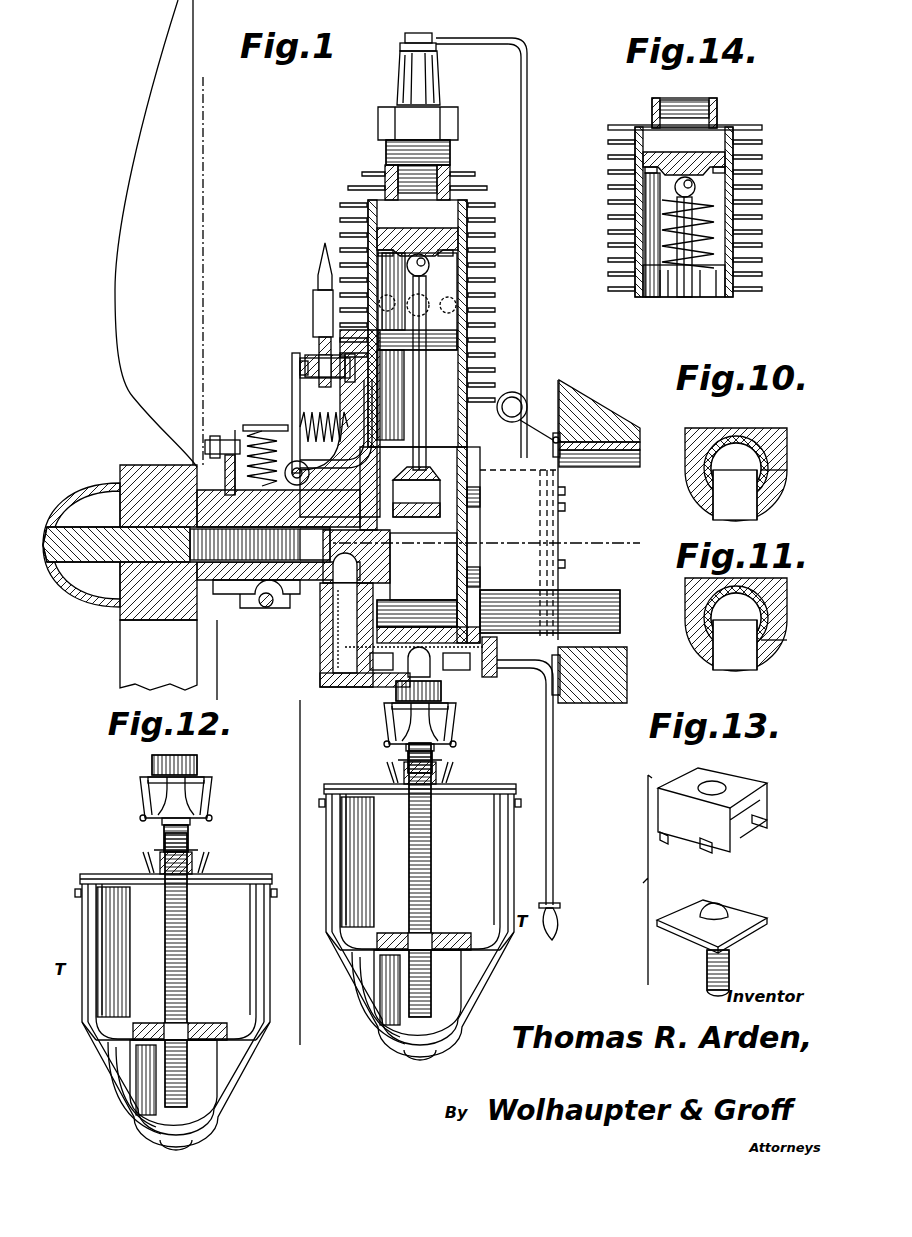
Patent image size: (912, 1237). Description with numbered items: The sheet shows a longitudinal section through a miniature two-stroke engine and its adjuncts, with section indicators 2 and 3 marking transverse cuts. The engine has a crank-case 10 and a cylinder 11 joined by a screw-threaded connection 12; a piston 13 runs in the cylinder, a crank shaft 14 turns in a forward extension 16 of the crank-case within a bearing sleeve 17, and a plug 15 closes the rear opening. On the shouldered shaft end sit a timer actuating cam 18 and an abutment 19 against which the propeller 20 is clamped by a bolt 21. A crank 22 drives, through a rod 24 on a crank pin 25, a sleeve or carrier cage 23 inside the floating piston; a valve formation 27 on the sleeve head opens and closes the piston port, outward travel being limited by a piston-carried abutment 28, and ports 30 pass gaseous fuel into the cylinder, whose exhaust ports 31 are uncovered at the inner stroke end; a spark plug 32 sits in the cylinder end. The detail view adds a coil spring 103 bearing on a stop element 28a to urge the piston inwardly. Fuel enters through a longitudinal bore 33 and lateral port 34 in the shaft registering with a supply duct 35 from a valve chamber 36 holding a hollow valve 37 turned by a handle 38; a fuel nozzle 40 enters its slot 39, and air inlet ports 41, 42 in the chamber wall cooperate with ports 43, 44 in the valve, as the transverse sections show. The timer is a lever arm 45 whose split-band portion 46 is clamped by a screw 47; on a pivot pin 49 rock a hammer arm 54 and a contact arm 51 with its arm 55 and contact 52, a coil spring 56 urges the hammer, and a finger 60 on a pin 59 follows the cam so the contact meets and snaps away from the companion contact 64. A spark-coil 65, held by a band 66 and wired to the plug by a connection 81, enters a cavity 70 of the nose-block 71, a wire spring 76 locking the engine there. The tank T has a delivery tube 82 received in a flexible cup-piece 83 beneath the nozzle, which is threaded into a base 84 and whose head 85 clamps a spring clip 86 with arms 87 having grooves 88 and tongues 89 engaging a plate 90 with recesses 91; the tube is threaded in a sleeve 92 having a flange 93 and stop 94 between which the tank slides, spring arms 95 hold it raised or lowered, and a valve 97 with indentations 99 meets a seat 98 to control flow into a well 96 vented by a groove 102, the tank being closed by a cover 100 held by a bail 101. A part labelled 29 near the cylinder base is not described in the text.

In FIG. 1, the section line 2- 2 is at (197, 77).
In FIG. 1, the section line 3- 3 is at (45, 556).
In FIG. 1, the crank-case 10 is at (472, 575).
In FIG. 1, the cylinder 11 is at (397, 385).
In FIG. 1, the screw-threaded connection 12 is at (470, 408).
In FIG. 1, the piston 13 is at (446, 240).
In FIG. 14, the piston 13 is at (635, 150).
In FIG. 1, the crank shaft 14 is at (290, 582).
In FIG. 1, the plug 15 is at (470, 531).
In FIG. 1, the forward extension 16 is at (252, 600).
In FIG. 1, the bearing sleeve 17 is at (336, 435).
In FIG. 1, the timer actuating cam 18 is at (242, 582).
In FIG. 1, the abutment 19 is at (205, 600).
In FIG. 1, the propeller 20 is at (124, 284).
In FIG. 1, the bolt 21 is at (186, 544).
In FIG. 1, the crank 22 is at (400, 488).
In FIG. 1, the sleeve or carrier cage 23 is at (426, 276).
In FIG. 14, the sleeve or carrier cage 23 is at (720, 183).
In FIG. 1, the rod 24 is at (426, 400).
In FIG. 1, the crank pin 25 is at (426, 522).
In FIG. 1, the valve formation 27 is at (410, 240).
In FIG. 1, the piston-carried abutment 28 is at (437, 351).
In FIG. 14, the stop element 28a is at (718, 290).
In FIG. 1, the cylinder base 29 is at (462, 450).
In FIG. 1, the ports 30 is at (370, 232).
In FIG. 1, the exhaust ports 31 is at (462, 309).
In FIG. 1, the spark plug 32 is at (395, 144).
In FIG. 1, the longitudinal bore 33 is at (387, 562).
In FIG. 1, the lateral port 34 is at (388, 560).
In FIG. 1, the gaseous fuel supply duct 35 is at (340, 632).
In FIG. 1, the valve chamber 36 is at (385, 626).
In FIG. 10, the valve chamber 36 is at (738, 436).
In FIG. 11, the valve chamber 36 is at (765, 608).
In FIG. 1, the valve 37 is at (360, 664).
In FIG. 10, the valve 37 is at (706, 476).
In FIG. 11, the valve 37 is at (706, 616).
In FIG. 1, the handle 38 is at (553, 772).
In FIG. 1, the slot 39 is at (438, 630).
In FIG. 1, the fuel nozzle 40 is at (408, 680).
In FIG. 12, the fuel nozzle 40 is at (187, 748).
In FIG. 1, the air inlet port 41 is at (377, 672).
In FIG. 10, the air inlet port 41 is at (745, 512).
In FIG. 1, the air inlet port 42 is at (452, 675).
In FIG. 11, the air inlet port 42 is at (745, 662).
In FIG. 1, the air inlet port 43 is at (365, 695).
In FIG. 10, the air inlet port 43 is at (768, 468).
In FIG. 1, the air inlet port 44 is at (493, 672).
In FIG. 11, the air inlet port 44 is at (765, 641).
In FIG. 1, the lever arm 45 is at (318, 292).
In FIG. 1, the split-band portion 46 is at (278, 508).
In FIG. 1, the screw 47 is at (265, 608).
In FIG. 1, the pivot pin 49 is at (340, 423).
In FIG. 1, the contact arm 51 is at (292, 376).
In FIG. 1, the contact 52 is at (296, 356).
In FIG. 1, the hammer arm 54 is at (302, 428).
In FIG. 1, the forwardly extending arm 55 is at (258, 425).
In FIG. 1, the coil spring 56 is at (240, 440).
In FIG. 1, the pin 59 is at (205, 447).
In FIG. 1, the cam-follower finger 60 is at (225, 486).
In FIG. 1, the companion contact 64 is at (318, 348).
In FIG. 1, the spark-coil 65 is at (541, 510).
In FIG. 1, the band 66 is at (560, 456).
In FIG. 1, the cavity 70 is at (555, 646).
In FIG. 1, the nose-block 71 is at (576, 420).
In FIG. 1, the wire spring 76 is at (526, 402).
In FIG. 1, the connection 81 is at (527, 250).
In FIG. 1, the fuel delivery tube 82 is at (442, 759).
In FIG. 12, the fuel delivery tube 82 is at (197, 838).
In FIG. 13, the fuel delivery tube 82 is at (730, 965).
In FIG. 1, the flexible cup-piece 83 is at (438, 723).
In FIG. 12, the flexible cup-piece 83 is at (191, 797).
In FIG. 1, the base 84 is at (450, 695).
In FIG. 12, the base 84 is at (158, 762).
In FIG. 1, the head 85 is at (394, 719).
In FIG. 12, the head 85 is at (150, 780).
In FIG. 12, the spring clip 86 is at (225, 763).
In FIG. 13, the spring clip 86 is at (740, 775).
In FIG. 1, the spring arms 87 is at (425, 738).
In FIG. 12, the spring arms 87 is at (176, 806).
In FIG. 13, the grooves 88 is at (716, 840).
In FIG. 13, the tongues 89 is at (760, 815).
In FIG. 1, the plate 90 is at (388, 754).
In FIG. 12, the plate 90 is at (148, 820).
In FIG. 13, the plate 90 is at (750, 925).
In FIG. 13, the recesses 91 is at (736, 908).
In FIG. 1, the sleeve 92 is at (441, 880).
In FIG. 12, the sleeve 92 is at (196, 970).
In FIG. 1, the flange 93 is at (402, 772).
In FIG. 12, the flange 93 is at (155, 853).
In FIG. 1, the stop 94 is at (420, 871).
In FIG. 12, the stop 94 is at (176, 961).
In FIG. 1, the spring arms 95 is at (441, 772).
In FIG. 12, the spring arms 95 is at (174, 862).
In FIG. 1, the well 96 is at (378, 1005).
In FIG. 12, the well 96 is at (128, 1088).
In FIG. 1, the valve 97 is at (420, 929).
In FIG. 12, the valve 97 is at (176, 1017).
In FIG. 1, the seat 98 is at (518, 951).
In FIG. 12, the seat 98 is at (262, 1041).
In FIG. 1, the peripheral indentations 99 is at (340, 953).
In FIG. 12, the peripheral indentations 99 is at (89, 1040).
In FIG. 1, the cap or cover 100 is at (420, 800).
In FIG. 12, the cap or cover 100 is at (187, 879).
In FIG. 1, the bail 101 is at (423, 996).
In FIG. 12, the bail 101 is at (180, 1086).
In FIG. 1, the groove 102 is at (395, 992).
In FIG. 12, the groove 102 is at (145, 1082).
In FIG. 13, the groove 102 is at (707, 975).
In FIG. 14, the coil spring 103 is at (718, 233).